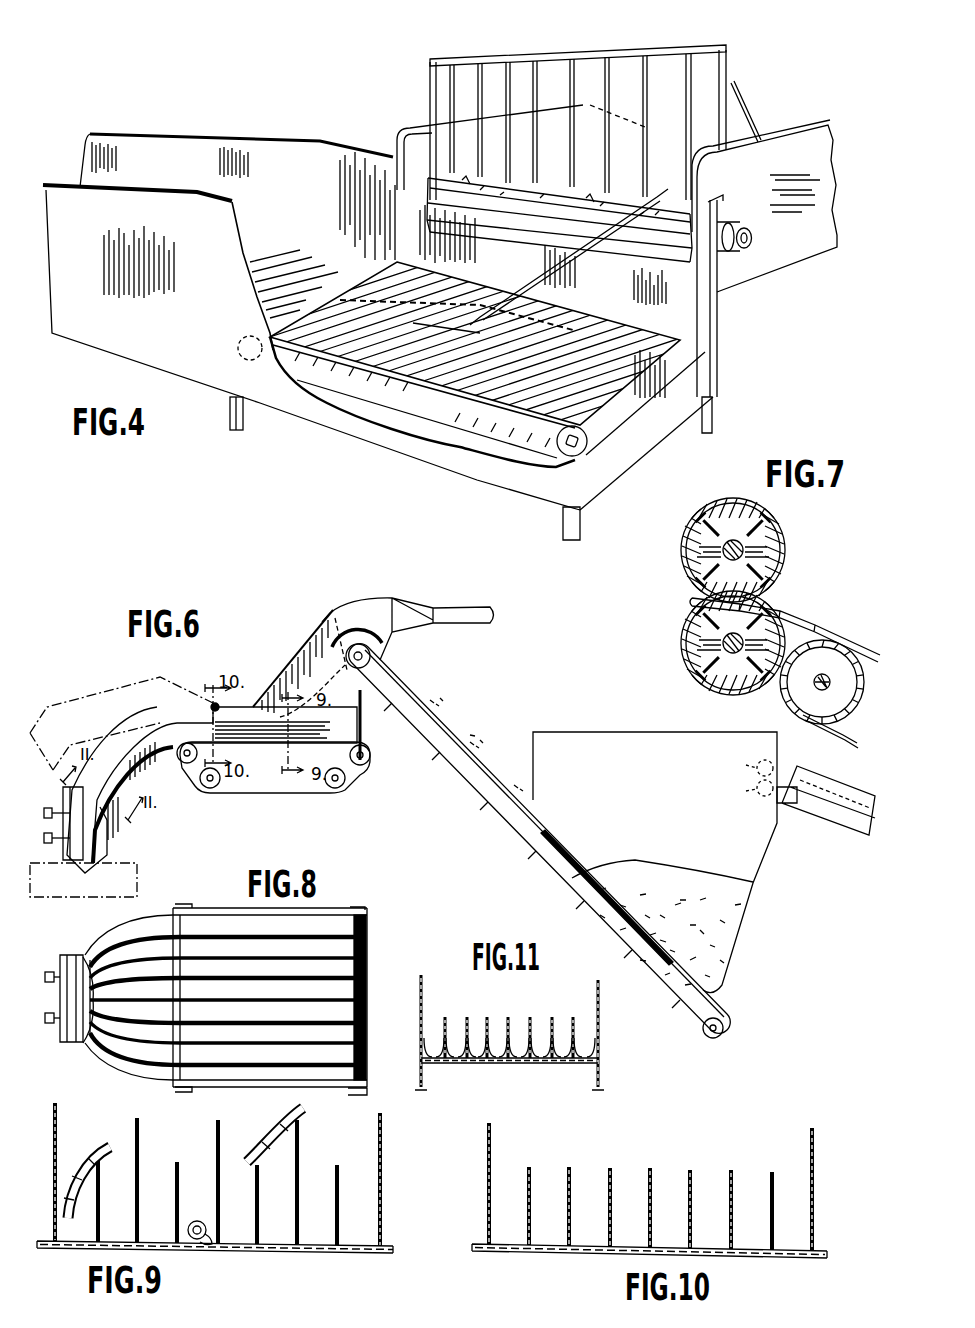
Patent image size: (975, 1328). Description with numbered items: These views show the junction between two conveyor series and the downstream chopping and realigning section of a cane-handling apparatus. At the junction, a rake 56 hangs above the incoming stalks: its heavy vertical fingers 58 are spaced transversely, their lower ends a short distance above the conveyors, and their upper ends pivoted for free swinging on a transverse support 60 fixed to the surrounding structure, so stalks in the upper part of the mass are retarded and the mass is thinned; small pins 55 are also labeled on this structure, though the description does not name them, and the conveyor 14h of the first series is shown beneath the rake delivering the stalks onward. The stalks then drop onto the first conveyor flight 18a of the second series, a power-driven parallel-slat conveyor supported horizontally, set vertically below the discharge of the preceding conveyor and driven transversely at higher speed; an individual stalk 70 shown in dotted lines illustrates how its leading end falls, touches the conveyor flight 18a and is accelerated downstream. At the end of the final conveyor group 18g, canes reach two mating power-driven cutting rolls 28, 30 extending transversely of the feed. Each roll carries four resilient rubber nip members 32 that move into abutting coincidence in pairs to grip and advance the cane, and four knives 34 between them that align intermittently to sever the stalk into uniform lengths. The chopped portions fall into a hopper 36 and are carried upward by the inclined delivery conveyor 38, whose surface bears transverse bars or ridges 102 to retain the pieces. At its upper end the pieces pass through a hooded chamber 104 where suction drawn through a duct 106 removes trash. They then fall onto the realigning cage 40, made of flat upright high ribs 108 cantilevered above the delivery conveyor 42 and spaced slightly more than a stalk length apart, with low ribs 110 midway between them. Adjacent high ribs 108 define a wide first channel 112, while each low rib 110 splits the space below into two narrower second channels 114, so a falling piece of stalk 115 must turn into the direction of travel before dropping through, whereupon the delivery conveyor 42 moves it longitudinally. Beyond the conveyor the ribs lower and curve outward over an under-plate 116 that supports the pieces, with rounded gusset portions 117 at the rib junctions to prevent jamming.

In FIG. 4, the transverse support 60 is at (436, 62).
In FIG. 4, the rake 56 is at (585, 111).
In FIG. 4, the vertical fingers 58 is at (600, 135).
In FIG. 4, the pins 55 is at (465, 182).
In FIG. 4, the individual stalk 70 is at (543, 262).
In FIG. 4, the trough bar 14h is at (609, 248).
In FIG. 4, the first conveyor flight 18a is at (413, 403).
In FIG. 6, the duct 106 is at (375, 608).
In FIG. 6, the hooded chamber 104 is at (302, 660).
In FIG. 6, the realigning cage 40 is at (235, 708).
In FIG. 6, the delivery conveyor 42 is at (280, 793).
In FIG. 8, the delivery conveyor 42 is at (360, 1072).
In FIG. 9, the delivery conveyor 42 is at (340, 1251).
In FIG. 10, the delivery conveyor 42 is at (538, 1254).
In FIG. 6, the transversely extending bars or ridges 102 is at (480, 765).
In FIG. 6, the inclined delivery conveyor 38 is at (497, 790).
In FIG. 6, the hopper 36 is at (600, 748).
In FIG. 6, the cutting roll 28 is at (738, 761).
In FIG. 7, the cutting roll 28 is at (752, 526).
In FIG. 6, the cutting roll 30 is at (738, 789).
In FIG. 7, the cutting roll 30 is at (712, 683).
In FIG. 7, the nip members 32 is at (782, 557).
In FIG. 7, the knives 34 is at (768, 593).
In FIG. 6, the final conveyor group 18g is at (840, 822).
In FIG. 7, the final conveyor group 18g is at (867, 648).
In FIG. 8, the high ribs 108 is at (348, 956).
In FIG. 9, the high ribs 108 is at (302, 1127).
In FIG. 8, the low ribs 110 is at (348, 977).
In FIG. 9, the low ribs 110 is at (340, 1175).
In FIG. 9, the first channel 112 is at (352, 1130).
In FIG. 9, the second channels 114 is at (357, 1205).
In FIG. 9, the piece of stalk 115 is at (272, 1138).
In FIG. 11, the under-plate 116 is at (529, 1064).
In FIG. 11, the rounded gusset portions 117 is at (458, 1052).